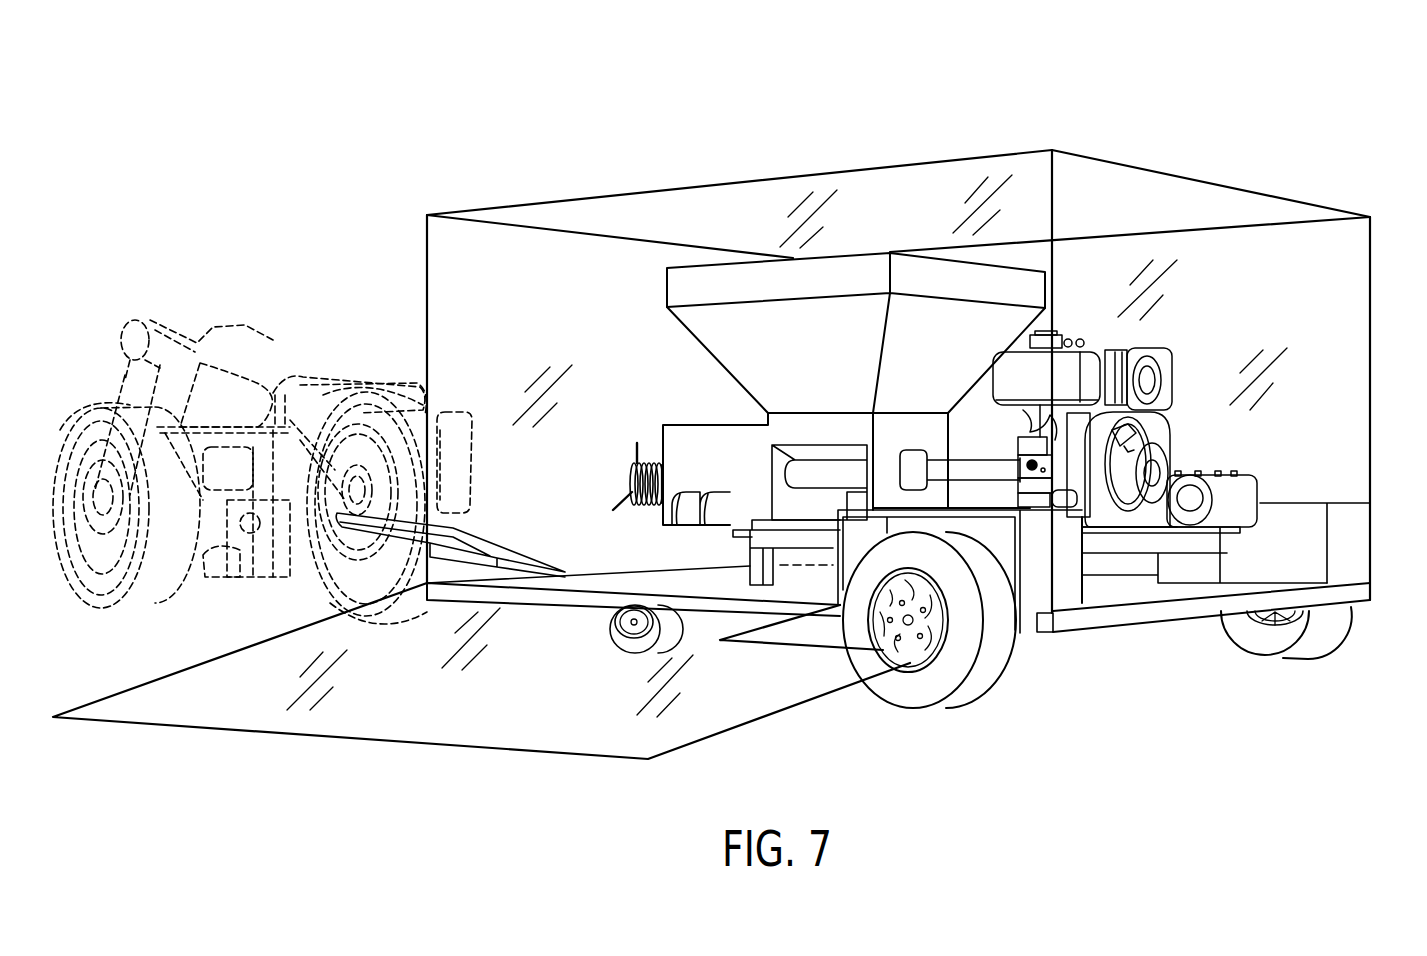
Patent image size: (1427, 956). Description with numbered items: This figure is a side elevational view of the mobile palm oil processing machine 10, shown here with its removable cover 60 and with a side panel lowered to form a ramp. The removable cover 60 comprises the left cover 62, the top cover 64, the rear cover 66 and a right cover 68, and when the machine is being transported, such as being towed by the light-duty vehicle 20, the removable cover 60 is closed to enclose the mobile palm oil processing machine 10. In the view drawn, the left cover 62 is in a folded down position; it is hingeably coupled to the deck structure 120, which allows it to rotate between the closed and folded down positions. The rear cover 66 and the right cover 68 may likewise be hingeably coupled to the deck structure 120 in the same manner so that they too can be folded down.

The mobile palm oil processing machine 10 is at (936, 31).
The light-duty vehicle 20 is at (273, 377).
The removable cover 60 is at (1052, 150).
The left cover 62 is at (541, 682).
The top cover 64 is at (678, 234).
The rear cover 66 is at (1337, 297).
The right cover 68 is at (1370, 217).
The deck structure 120 is at (582, 606).